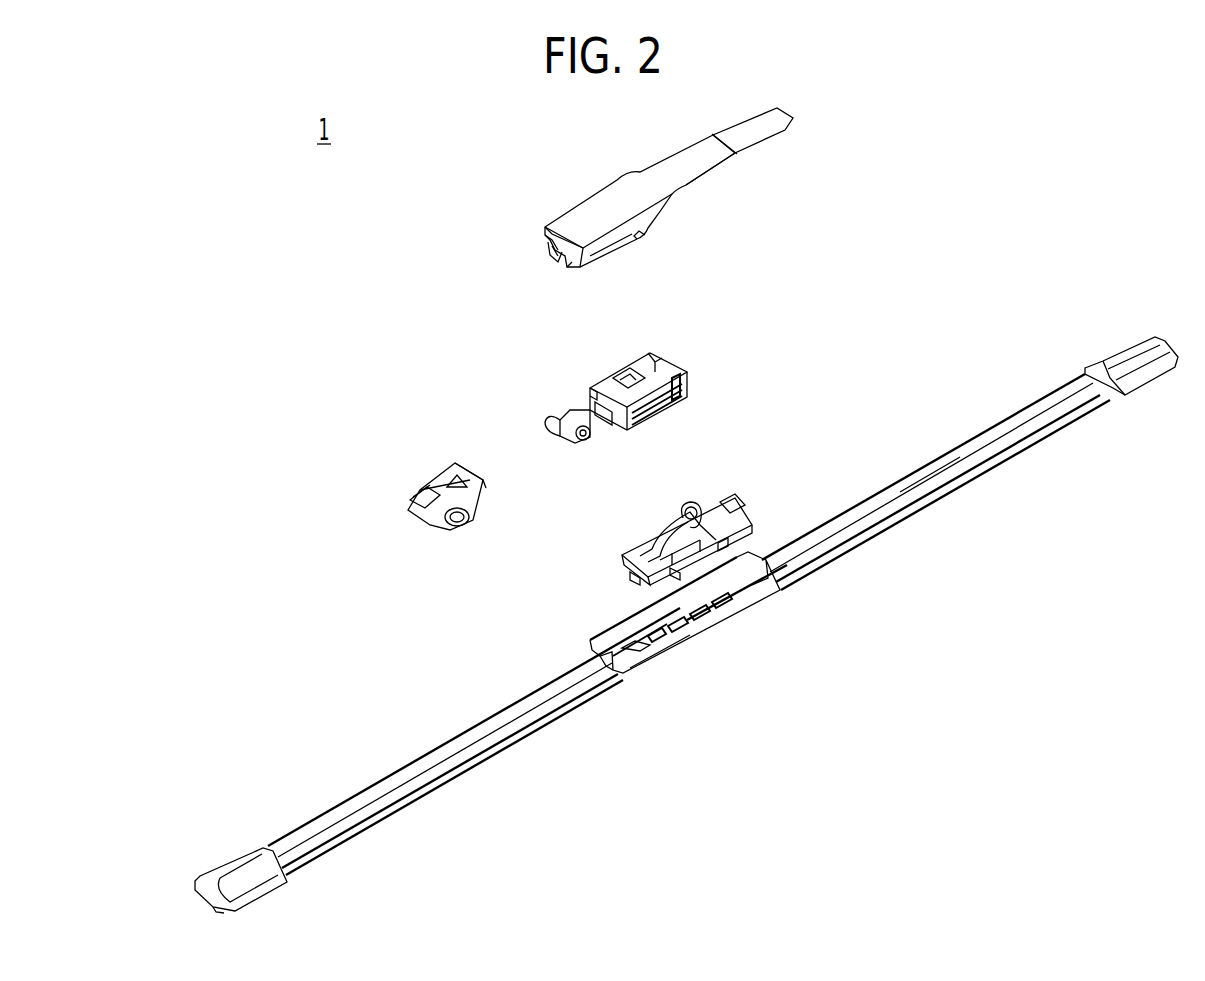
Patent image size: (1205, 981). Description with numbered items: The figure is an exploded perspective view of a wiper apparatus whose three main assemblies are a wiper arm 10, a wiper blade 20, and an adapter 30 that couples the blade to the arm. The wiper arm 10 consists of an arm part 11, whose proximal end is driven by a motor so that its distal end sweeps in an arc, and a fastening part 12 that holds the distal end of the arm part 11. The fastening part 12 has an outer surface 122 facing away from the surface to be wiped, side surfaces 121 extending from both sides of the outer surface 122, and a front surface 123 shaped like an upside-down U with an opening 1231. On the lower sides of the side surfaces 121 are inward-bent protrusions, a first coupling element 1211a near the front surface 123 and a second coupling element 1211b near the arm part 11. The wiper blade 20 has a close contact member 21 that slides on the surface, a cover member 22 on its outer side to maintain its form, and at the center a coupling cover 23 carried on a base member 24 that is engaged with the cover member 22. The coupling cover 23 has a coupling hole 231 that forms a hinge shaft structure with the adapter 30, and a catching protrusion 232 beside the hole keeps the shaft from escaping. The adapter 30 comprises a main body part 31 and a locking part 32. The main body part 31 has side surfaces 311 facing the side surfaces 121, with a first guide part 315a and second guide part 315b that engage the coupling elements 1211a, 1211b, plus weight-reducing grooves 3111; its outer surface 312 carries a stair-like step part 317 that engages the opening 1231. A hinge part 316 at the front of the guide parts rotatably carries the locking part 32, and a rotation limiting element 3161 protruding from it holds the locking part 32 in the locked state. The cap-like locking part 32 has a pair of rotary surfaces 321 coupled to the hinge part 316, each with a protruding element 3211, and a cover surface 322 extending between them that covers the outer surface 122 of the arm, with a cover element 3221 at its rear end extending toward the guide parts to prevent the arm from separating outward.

The wiper arm 10 is at (643, 196).
The arm part 11 is at (787, 122).
The fastening part 12 is at (712, 136).
The side surfaces 121 is at (617, 242).
The outer surface 122 is at (597, 205).
The front surface 123 is at (546, 229).
The first coupling element 1211a is at (545, 248).
The second coupling element 1211b is at (645, 235).
The opening 1231 is at (552, 262).
The wiper blade 20 is at (686, 625).
The close contact member 21 is at (1002, 460).
The cover member 22 is at (973, 455).
The coupling cover 23 is at (719, 513).
The coupling hole 231 is at (683, 518).
The catching protrusion 232 is at (700, 507).
The base member 24 is at (767, 600).
The adapter 30 is at (652, 405).
The main body part 31 is at (648, 394).
The side surfaces 311 is at (655, 360).
The outer surface 312 is at (640, 362).
The grooves 3111 is at (650, 417).
The first guide part 315a is at (613, 427).
The second guide part 315b is at (672, 403).
The hinge part 316 is at (548, 458).
The rotation limiting element 3161 is at (560, 432).
The step part 317 is at (592, 385).
The locking part 32 is at (456, 491).
The rotary surfaces 321 is at (473, 520).
The protruding element 3211 is at (428, 520).
The cover surface 322 is at (448, 475).
The cover element 3221 is at (483, 482).